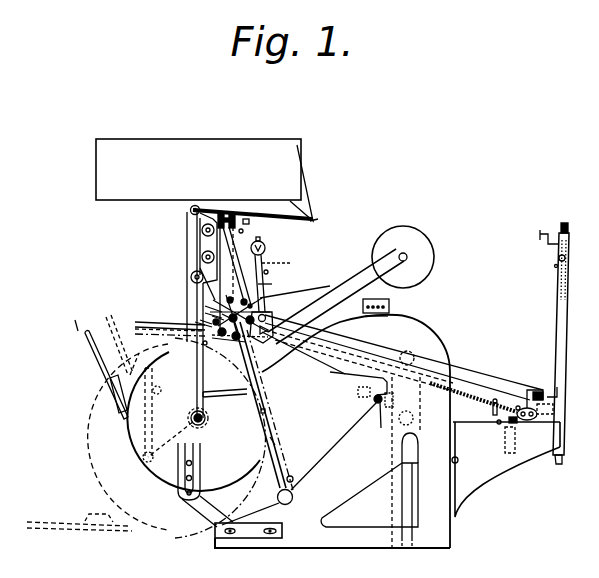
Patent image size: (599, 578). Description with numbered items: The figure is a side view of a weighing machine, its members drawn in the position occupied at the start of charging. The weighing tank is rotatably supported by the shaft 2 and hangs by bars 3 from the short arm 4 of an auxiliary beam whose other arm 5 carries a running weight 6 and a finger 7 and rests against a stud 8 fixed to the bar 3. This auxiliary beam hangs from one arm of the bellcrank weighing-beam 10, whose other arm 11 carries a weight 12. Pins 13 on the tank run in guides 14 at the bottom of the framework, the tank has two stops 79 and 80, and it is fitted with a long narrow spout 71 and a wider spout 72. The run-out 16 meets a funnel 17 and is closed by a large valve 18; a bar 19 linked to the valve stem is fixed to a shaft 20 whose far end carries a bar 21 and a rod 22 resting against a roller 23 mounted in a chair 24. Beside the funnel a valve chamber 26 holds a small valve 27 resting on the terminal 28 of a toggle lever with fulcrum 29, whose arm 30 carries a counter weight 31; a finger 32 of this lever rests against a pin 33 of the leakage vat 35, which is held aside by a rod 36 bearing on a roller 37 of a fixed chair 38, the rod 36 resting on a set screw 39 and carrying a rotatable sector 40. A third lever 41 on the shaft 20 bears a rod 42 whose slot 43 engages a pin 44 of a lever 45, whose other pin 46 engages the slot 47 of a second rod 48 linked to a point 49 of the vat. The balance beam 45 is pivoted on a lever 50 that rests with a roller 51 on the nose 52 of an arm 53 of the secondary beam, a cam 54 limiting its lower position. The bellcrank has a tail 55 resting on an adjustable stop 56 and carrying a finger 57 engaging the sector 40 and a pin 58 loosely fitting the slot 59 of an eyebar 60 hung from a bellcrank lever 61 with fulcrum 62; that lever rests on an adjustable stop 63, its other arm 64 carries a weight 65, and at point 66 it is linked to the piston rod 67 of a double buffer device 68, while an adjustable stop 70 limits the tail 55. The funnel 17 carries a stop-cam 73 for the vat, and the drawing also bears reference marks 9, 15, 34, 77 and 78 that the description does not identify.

The shaft 2 is at (194, 421).
The bars 3 is at (198, 389).
The short arm 4 is at (202, 257).
The arm 5 is at (265, 426).
The running weight 6 is at (278, 495).
The finger 7 is at (291, 477).
The stud 8 is at (232, 395).
The bracket 9 is at (203, 236).
The bellcrank weighing-beam 10 is at (242, 272).
The arm 11 is at (372, 272).
The weight 12 is at (392, 245).
The pins 13 is at (199, 456).
The guides 14 is at (193, 467).
The bracket 15 is at (342, 540).
The run-out 16 is at (270, 260).
The funnel 17 is at (232, 318).
The large valve 18 is at (192, 275).
The bar 19 is at (270, 284).
The shaft 20 is at (268, 298).
The bar 21 is at (296, 360).
The rod 22 is at (368, 378).
The roller 23 is at (374, 402).
The chair 24 is at (380, 406).
The valve chamber 26 is at (205, 312).
The small valve 27 is at (204, 371).
The terminal 28 is at (207, 345).
The fulcrum 29 is at (195, 322).
The arm 30 is at (215, 316).
The counter weight 31 is at (205, 322).
The finger 32 is at (163, 337).
The pin 33 is at (170, 338).
The rod 34 is at (268, 271).
The leakage vat 35 is at (140, 322).
The rod 36 is at (240, 391).
The roller 37 is at (531, 458).
The fixed chair 38 is at (514, 424).
The set screw 39 is at (507, 429).
The rotatable sector 40 is at (498, 424).
The third lever 41 is at (262, 300).
The rod 42 is at (244, 230).
The slot 43 is at (239, 226).
The pin 44 is at (237, 219).
The lever 45 is at (234, 214).
The pin 46 is at (230, 214).
The slot 47 is at (226, 214).
The second rod 48 is at (251, 248).
The point 49 is at (200, 268).
The lever 50 is at (250, 222).
The roller 51 is at (190, 211).
The nose 52 is at (205, 220).
The arm 53 is at (202, 231).
The cam 54 is at (257, 237).
The tail 55 is at (554, 266).
The adjustable stop 56 is at (532, 418).
The finger 57 is at (492, 412).
The pin 58 is at (523, 405).
The slot 59 is at (517, 406).
The eyebar 60 is at (540, 236).
The bellcrank lever 61 is at (458, 370).
The fulcrum 62 is at (266, 316).
The adjustable stop 63 is at (544, 385).
The arm 64 is at (256, 216).
The weight 65 is at (250, 306).
The point 66 is at (410, 352).
The piston rod 67 is at (414, 355).
The double buffer device 68 is at (401, 461).
The adjustable stop 70 is at (558, 257).
The spout 71 is at (98, 358).
The spout 72 is at (115, 385).
The stop-cam 73 is at (222, 318).
The rod 77 is at (280, 461).
The pin 78 is at (272, 440).
The stop 79 is at (188, 345).
The stop 80 is at (264, 402).